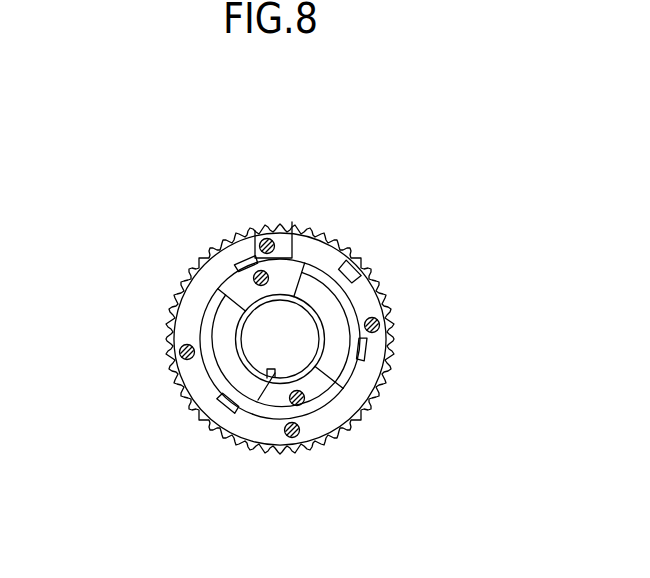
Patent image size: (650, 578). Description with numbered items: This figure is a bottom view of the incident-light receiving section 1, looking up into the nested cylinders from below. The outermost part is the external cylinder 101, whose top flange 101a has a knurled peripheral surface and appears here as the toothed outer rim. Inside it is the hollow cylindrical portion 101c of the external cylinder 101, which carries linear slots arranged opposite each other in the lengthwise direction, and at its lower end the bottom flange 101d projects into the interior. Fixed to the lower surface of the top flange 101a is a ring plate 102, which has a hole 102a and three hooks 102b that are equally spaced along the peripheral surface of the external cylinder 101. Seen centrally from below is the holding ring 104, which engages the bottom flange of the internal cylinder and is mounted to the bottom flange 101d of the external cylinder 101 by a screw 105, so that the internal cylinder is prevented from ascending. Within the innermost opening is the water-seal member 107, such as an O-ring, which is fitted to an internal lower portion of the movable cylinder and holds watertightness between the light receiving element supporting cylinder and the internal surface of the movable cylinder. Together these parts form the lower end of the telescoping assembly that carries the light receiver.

The incident-light receiving section 1 is at (173, 230).
The external cylinder 101 is at (307, 233).
The top flange 101a is at (284, 447).
The hollow cylindrical portion 101c is at (292, 222).
The bottom flange 101d is at (327, 392).
The ring plate 102 is at (192, 308).
The hole 102a is at (352, 274).
The hooks 102b is at (203, 263).
The holding ring 104 is at (228, 367).
The screw 105 is at (260, 271).
The water-seal member 107 is at (272, 375).